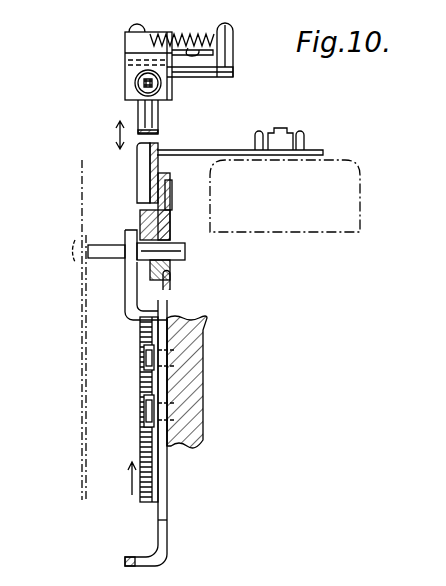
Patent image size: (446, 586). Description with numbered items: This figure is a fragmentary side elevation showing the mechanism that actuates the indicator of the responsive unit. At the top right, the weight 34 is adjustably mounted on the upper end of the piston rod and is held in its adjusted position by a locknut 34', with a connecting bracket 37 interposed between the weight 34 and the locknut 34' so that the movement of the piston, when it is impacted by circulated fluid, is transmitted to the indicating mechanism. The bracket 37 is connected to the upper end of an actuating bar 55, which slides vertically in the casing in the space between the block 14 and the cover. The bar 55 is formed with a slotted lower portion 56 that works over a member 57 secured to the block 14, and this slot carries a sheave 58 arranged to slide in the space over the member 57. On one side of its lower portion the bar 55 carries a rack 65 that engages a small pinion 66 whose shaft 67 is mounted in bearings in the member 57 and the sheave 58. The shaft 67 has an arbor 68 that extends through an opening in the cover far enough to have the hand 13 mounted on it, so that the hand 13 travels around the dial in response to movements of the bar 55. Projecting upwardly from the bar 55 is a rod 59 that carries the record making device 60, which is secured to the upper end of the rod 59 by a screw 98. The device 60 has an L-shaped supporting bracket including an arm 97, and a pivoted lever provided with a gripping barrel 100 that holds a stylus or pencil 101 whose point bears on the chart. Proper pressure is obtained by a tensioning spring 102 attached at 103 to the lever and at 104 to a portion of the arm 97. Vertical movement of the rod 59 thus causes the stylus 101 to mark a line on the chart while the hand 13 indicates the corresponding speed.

The hand 13 is at (82, 408).
The block 14 is at (182, 381).
The weight 34 is at (302, 196).
The locknut 34' is at (301, 128).
The connecting bracket 37 is at (320, 151).
The actuating bar 55 is at (168, 511).
The slotted lower portion 56 is at (170, 486).
The member 57 is at (130, 306).
The sheave 58 is at (172, 276).
The rod 59 is at (160, 122).
The record making device 60 is at (173, 53).
The rack 65 is at (140, 438).
The pinion 66 is at (140, 218).
The shaft 67 is at (186, 251).
The arbor 68 is at (112, 262).
The arm 97 is at (200, 78).
The screw 98 is at (135, 84).
The gripping barrel 100 is at (126, 42).
The stylus 101 is at (214, 36).
The spring 102 is at (175, 32).
The spring attachment point on lever 103 is at (131, 28).
The spring attachment point on arm 104 is at (233, 27).